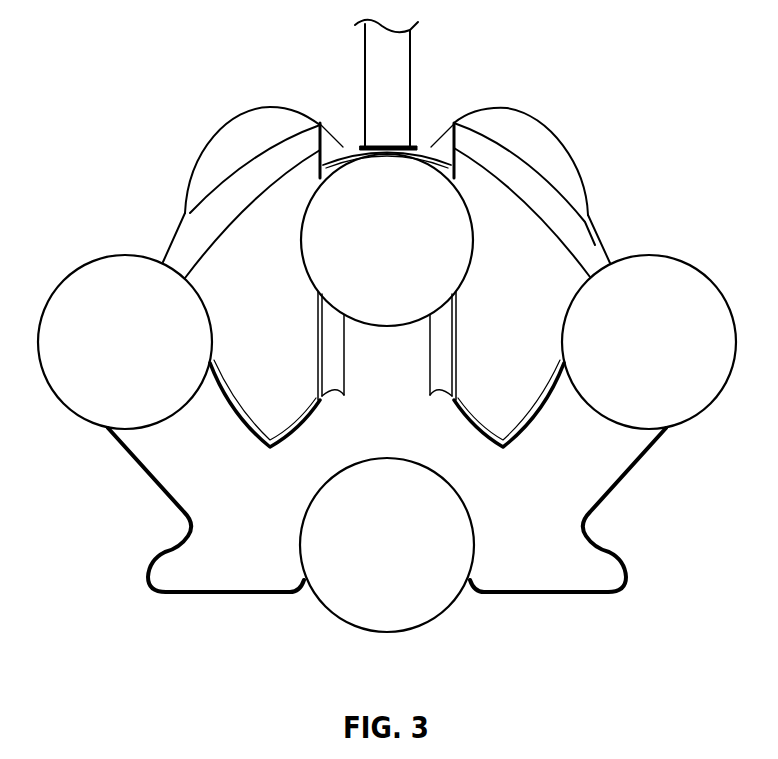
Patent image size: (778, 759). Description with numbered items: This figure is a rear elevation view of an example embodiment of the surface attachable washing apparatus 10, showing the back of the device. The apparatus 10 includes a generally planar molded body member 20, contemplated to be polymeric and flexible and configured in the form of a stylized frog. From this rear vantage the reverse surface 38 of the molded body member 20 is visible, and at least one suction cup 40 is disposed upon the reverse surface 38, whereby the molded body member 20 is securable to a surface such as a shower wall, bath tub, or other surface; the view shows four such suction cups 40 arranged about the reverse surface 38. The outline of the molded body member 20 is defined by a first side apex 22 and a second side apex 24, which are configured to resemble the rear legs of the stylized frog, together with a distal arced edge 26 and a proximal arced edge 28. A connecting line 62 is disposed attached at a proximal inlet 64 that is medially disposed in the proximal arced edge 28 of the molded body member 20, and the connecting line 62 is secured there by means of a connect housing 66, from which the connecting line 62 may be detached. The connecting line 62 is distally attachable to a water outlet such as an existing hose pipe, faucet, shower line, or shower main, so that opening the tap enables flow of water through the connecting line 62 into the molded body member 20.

The surface attachable washing apparatus 10 is at (587, 72).
The molded body member 20 is at (553, 264).
The first side apex 22 is at (668, 429).
The second side apex 24 is at (108, 429).
The distal arced edge 26 is at (482, 588).
The proximal arced edge 28 is at (311, 119).
The reverse surface 38 is at (404, 406).
The suction cup 40 is at (143, 358).
The connecting line 62 is at (397, 52).
The proximal inlet 64 is at (357, 135).
The connect housing 66 is at (418, 152).